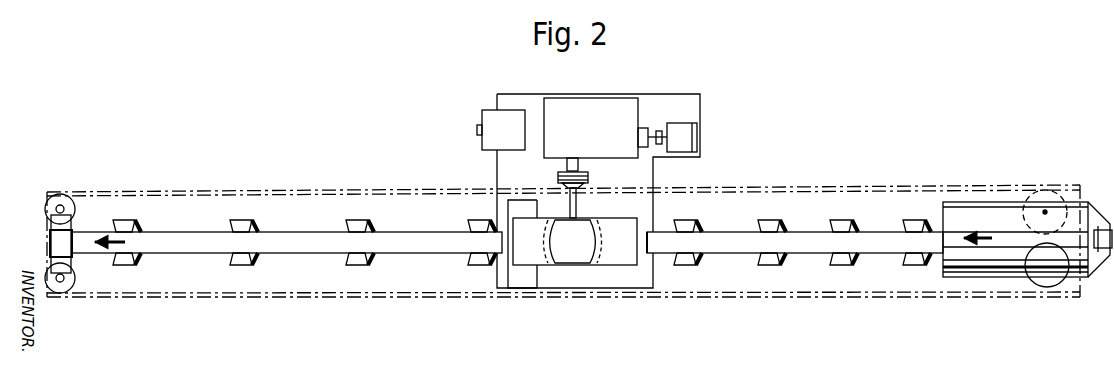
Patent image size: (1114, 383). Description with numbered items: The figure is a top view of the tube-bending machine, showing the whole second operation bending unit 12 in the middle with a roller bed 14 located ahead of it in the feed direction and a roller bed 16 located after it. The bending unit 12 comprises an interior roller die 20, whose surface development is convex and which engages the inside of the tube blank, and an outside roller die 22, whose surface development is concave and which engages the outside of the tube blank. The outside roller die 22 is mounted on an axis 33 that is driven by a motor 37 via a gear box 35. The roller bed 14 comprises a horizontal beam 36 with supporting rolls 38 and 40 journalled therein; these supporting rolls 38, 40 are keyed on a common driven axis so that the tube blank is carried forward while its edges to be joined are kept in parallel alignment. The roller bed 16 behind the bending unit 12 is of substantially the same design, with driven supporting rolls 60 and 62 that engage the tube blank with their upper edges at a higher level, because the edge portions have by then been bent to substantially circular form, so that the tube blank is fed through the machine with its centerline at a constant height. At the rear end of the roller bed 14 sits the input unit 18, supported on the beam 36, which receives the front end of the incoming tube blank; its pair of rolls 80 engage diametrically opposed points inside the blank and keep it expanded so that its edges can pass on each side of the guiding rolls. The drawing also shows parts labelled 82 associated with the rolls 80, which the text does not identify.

The bending unit 12 is at (601, 92).
The roller bed 14 is at (856, 183).
The roller bed 16 is at (307, 188).
The input unit 18 is at (955, 214).
The interior roller die 20 is at (598, 218).
The outside roller die 22 is at (608, 236).
The axis 33 is at (570, 206).
The gear box 35 is at (591, 143).
The horizontal beam 36 is at (796, 236).
The motor 37 is at (690, 136).
The supporting roll 38 is at (767, 221).
The supporting roll 40 is at (766, 265).
The supporting roll 60 is at (245, 221).
The supporting roll 62 is at (250, 266).
The rolls 80 is at (1032, 195).
The roller shafts 82 is at (1045, 210).